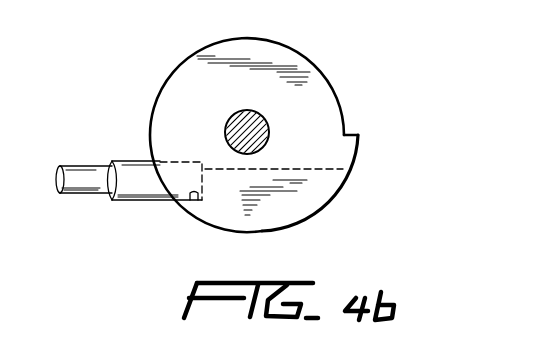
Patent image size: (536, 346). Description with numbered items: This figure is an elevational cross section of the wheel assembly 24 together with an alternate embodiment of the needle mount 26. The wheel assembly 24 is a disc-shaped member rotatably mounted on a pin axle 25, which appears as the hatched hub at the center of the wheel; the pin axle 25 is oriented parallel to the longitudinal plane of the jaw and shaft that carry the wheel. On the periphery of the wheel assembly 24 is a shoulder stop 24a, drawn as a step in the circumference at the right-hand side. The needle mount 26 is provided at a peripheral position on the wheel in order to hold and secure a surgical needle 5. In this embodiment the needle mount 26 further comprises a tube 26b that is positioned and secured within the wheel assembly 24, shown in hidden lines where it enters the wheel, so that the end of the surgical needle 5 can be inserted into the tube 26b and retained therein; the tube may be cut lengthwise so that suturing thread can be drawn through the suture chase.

The wheel assembly 24 is at (327, 84).
The shoulder stop 24a is at (364, 128).
The pin axle 25 is at (255, 147).
The surgical needle 5 is at (85, 183).
The tube 26b is at (152, 182).
The needle mount 26 is at (193, 203).